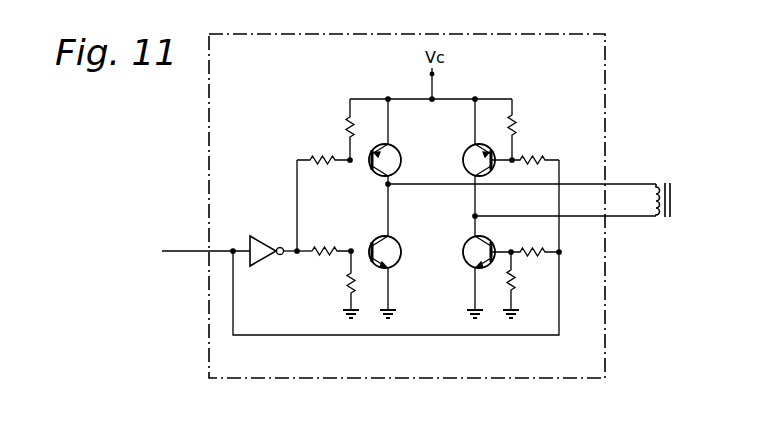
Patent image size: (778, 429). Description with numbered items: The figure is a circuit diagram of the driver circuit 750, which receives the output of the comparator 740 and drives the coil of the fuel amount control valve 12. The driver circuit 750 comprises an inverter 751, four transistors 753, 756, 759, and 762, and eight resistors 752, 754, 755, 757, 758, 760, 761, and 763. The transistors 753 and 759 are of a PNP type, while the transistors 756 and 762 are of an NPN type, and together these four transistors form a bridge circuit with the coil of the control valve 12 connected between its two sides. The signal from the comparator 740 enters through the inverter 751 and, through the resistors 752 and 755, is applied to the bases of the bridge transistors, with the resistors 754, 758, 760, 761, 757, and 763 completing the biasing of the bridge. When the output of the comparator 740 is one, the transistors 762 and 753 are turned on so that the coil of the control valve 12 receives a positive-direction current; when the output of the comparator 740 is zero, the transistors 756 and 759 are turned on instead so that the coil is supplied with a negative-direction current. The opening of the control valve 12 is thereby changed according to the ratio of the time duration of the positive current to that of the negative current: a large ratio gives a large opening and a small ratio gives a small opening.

The driver circuit 750 is at (606, 60).
The comparator 740 is at (173, 238).
The inverter 751 is at (256, 238).
The resistor 752 is at (320, 162).
The transistor 753 is at (398, 152).
The resistor 754 is at (348, 120).
The resistor 755 is at (318, 256).
The transistor 756 is at (398, 242).
The resistor 757 is at (347, 286).
The resistor 758 is at (537, 158).
The transistor 759 is at (462, 161).
The resistor 760 is at (518, 122).
The resistor 761 is at (531, 244).
The transistor 762 is at (465, 264).
The resistor 763 is at (515, 287).
The fuel amount control valve 12 is at (662, 178).